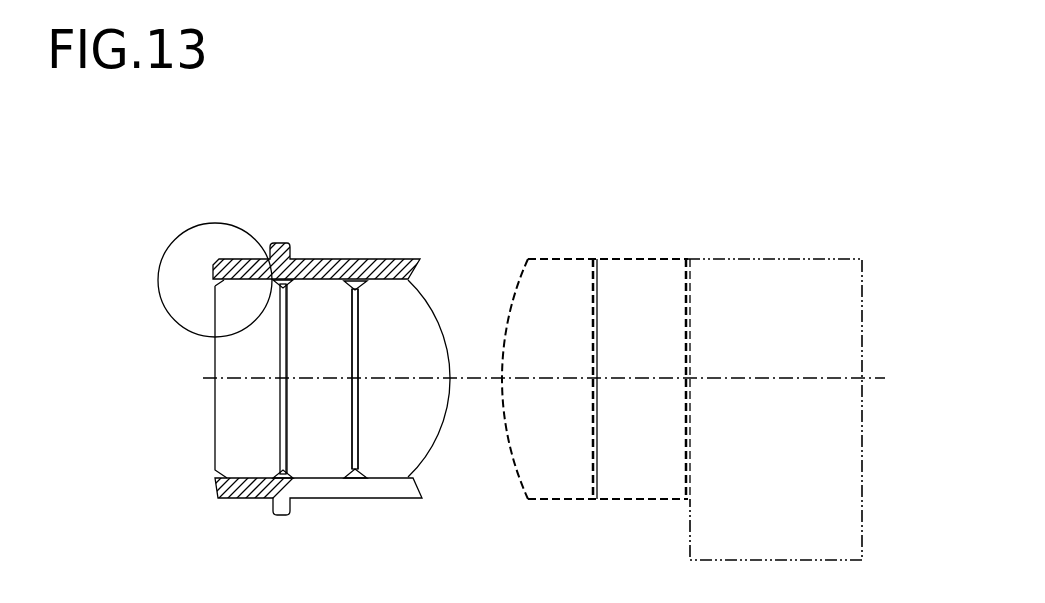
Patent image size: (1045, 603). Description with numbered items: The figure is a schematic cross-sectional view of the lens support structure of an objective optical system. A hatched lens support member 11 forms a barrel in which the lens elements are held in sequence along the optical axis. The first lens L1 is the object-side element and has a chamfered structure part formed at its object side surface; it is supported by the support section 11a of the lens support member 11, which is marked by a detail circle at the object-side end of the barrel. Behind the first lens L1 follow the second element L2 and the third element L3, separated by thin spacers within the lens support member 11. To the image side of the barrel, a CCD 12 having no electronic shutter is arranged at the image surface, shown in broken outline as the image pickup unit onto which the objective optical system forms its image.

The lens support member 11 is at (353, 267).
The support section 11a is at (212, 243).
The CCD 12 is at (742, 270).
The first lens L1 is at (238, 462).
The second parallel flat plate L2 is at (318, 462).
The first plano-convex lens L3 is at (395, 462).